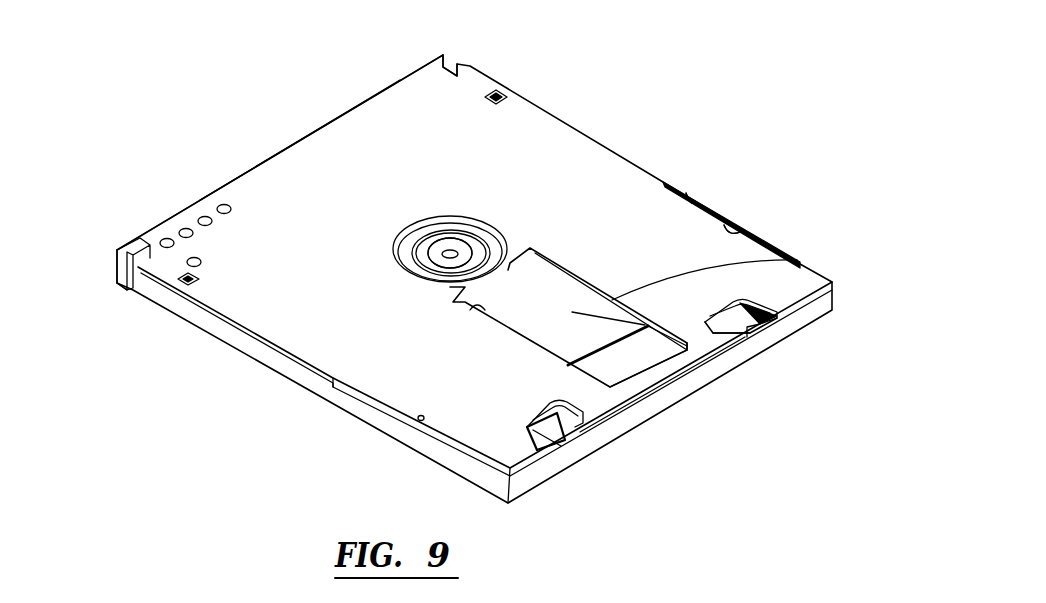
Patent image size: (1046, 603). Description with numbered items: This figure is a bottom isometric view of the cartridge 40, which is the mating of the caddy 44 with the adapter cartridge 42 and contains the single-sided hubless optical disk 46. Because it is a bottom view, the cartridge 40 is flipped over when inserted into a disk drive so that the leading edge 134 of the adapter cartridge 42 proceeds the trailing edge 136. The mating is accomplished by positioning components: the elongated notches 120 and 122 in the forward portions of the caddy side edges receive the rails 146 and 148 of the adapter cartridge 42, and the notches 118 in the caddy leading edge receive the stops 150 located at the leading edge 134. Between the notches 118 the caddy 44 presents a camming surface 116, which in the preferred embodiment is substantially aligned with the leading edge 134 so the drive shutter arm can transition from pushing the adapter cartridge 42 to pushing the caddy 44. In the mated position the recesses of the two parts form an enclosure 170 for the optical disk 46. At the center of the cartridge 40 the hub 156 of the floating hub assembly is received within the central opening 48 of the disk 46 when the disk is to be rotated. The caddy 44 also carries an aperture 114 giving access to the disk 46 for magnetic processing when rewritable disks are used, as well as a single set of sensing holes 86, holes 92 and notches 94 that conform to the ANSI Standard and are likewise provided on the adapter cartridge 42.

The cartridge 40 is at (733, 63).
The adapter cartridge 42 is at (218, 345).
The caddy 44 is at (357, 206).
The optical disk 46 is at (797, 260).
The central opening of the disk 48 is at (413, 265).
The sensing holes 86 is at (170, 240).
The holes 92 is at (500, 93).
The notches 94 is at (458, 72).
The aperture 114 is at (452, 302).
The camming surface 116 is at (660, 385).
The notches 118 is at (550, 443).
The elongated notch 120 is at (690, 196).
The elongated notch 122 is at (397, 413).
The leading edge 134 is at (633, 422).
The trailing edge 136 is at (313, 132).
The rail 146 is at (747, 228).
The rail 148 is at (423, 427).
The stops 150 is at (585, 438).
The hub 156 is at (467, 248).
The enclosure 170 is at (633, 358).